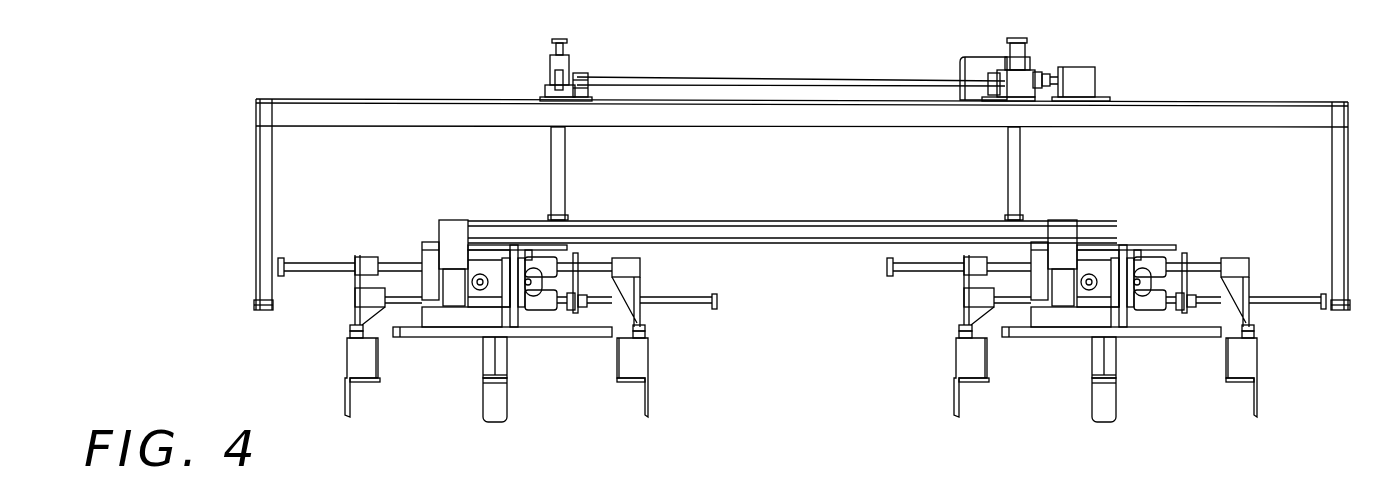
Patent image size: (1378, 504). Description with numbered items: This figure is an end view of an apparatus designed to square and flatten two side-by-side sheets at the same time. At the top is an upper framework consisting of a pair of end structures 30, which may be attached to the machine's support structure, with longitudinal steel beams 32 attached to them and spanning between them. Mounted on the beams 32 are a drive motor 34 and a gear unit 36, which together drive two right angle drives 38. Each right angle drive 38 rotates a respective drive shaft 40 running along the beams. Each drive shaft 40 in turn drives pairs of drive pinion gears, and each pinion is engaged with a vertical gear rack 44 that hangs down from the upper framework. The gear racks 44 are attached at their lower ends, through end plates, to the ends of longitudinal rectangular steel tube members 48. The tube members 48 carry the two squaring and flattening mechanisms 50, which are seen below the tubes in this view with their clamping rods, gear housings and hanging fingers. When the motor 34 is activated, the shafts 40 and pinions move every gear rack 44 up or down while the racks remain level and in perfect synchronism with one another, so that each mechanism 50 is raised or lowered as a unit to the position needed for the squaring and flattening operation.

The end structures 30 is at (257, 168).
The longitudinal steel beams 32 is at (1258, 70).
The drive motor 34 is at (962, 58).
The gear unit 36 is at (1035, 62).
The right angle drives 38 is at (1097, 75).
The drive shafts 40 is at (650, 77).
The vertical gear racks 44 is at (565, 164).
The longitudinal rectangular steel tube members 48 is at (813, 243).
The squaring and flattening mechanisms 50 is at (666, 361).